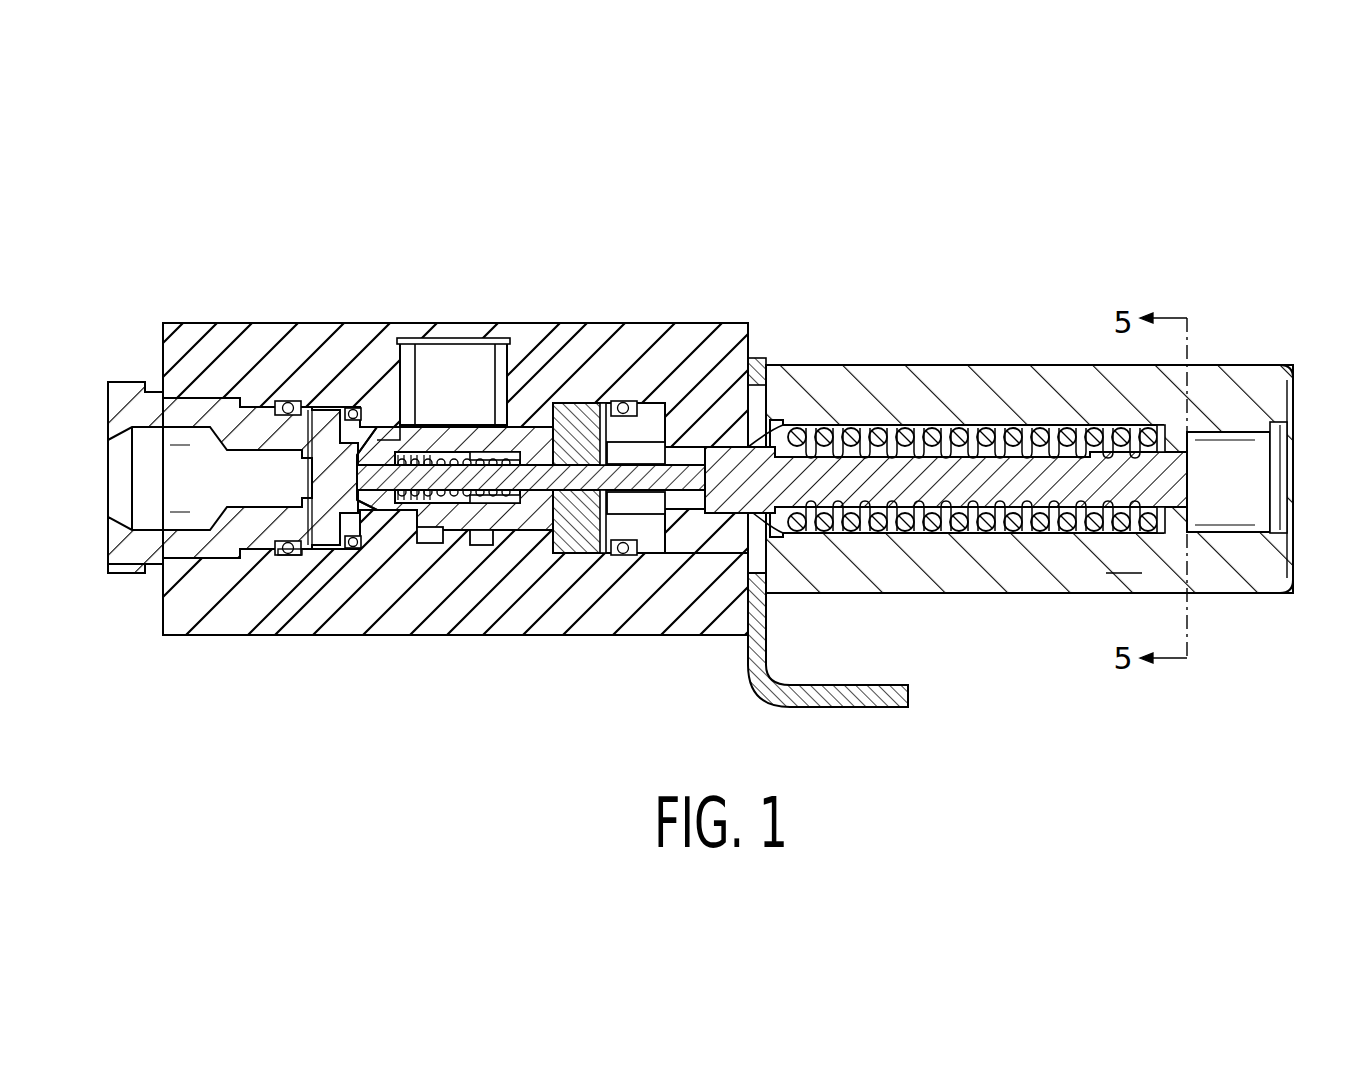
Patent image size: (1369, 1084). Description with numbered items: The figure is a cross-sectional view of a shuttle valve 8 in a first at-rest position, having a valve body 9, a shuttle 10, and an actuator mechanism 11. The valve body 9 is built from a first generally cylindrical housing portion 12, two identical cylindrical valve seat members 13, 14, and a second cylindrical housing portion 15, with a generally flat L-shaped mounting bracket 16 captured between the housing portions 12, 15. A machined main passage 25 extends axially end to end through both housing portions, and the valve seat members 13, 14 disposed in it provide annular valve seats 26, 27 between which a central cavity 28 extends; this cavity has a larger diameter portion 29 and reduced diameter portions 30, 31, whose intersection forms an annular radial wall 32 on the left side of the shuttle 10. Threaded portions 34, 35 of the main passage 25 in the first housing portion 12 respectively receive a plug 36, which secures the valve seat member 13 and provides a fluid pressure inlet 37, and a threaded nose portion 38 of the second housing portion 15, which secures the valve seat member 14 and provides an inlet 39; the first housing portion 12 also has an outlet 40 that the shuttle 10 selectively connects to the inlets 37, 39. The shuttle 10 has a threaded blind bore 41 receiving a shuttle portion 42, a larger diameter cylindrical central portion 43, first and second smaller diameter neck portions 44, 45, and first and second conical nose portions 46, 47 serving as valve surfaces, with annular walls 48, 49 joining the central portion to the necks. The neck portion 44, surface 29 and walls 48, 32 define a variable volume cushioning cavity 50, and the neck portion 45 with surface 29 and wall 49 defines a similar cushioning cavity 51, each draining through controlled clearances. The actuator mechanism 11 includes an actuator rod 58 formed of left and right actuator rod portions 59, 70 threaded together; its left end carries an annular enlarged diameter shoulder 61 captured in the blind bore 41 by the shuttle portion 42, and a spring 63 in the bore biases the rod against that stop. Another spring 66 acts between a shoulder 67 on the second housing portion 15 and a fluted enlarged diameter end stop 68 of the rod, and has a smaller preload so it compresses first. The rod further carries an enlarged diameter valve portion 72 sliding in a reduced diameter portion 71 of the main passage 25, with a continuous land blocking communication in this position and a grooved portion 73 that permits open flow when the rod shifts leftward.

The shuttle valve 8 is at (173, 682).
The valve body 9 is at (222, 330).
The shuttle 10 is at (437, 424).
The actuator mechanism 11 is at (650, 530).
The first generally cylindrical housing portion 12 is at (195, 400).
The valve seat member 13 is at (288, 410).
The valve seat member 14 is at (588, 556).
The second cylindrical housing portion 15 is at (1029, 479).
The L-shaped mounting bracket 16 is at (882, 708).
The main passage 25 is at (632, 562).
The annular valve seat 26 is at (290, 548).
The annular valve seat 27 is at (545, 560).
The central cavity 28 is at (345, 535).
The larger diameter portion 29 is at (372, 425).
The reduced diameter portion 30 is at (340, 420).
The reduced diameter portion 31 is at (605, 430).
The annular radial wall 32 is at (352, 410).
The threaded portion 34 is at (197, 563).
The threaded portion 35 is at (690, 562).
The plug 36 is at (193, 398).
The fluid pressure inlet 37 is at (165, 490).
The threaded nose portion 38 is at (715, 430).
The inlet 39 is at (1285, 445).
The outlet 40 is at (490, 455).
The blind bore 41 is at (400, 540).
The shuttle portion 42 is at (545, 548).
The larger diameter cylindrical central portion 43 is at (440, 545).
The first smaller diameter neck portion 44 is at (415, 445).
The second smaller diameter neck portion 45 is at (480, 545).
The first conical nose portion 46 is at (325, 540).
The second conical nose portion 47 is at (655, 465).
The annular wall 48 is at (385, 530).
The annular wall 49 is at (475, 545).
The variable volume cushioning cavity 50 is at (388, 430).
The variable volume cushioning cavity 51 is at (565, 445).
The actuator rod 58 is at (1023, 515).
The left actuator rod portion 59 is at (758, 358).
The annular enlarged diameter shoulder 61 is at (560, 415).
The spring 63 is at (500, 447).
The spring 66 is at (985, 425).
The shoulder 67 is at (780, 395).
The enlarged diameter end stop 68 is at (1127, 433).
The right actuator rod portion 70 is at (972, 460).
The reduced diameter portion 71 is at (700, 540).
The enlarged diameter valve portion 72 is at (740, 500).
The grooved portion 73 is at (790, 512).